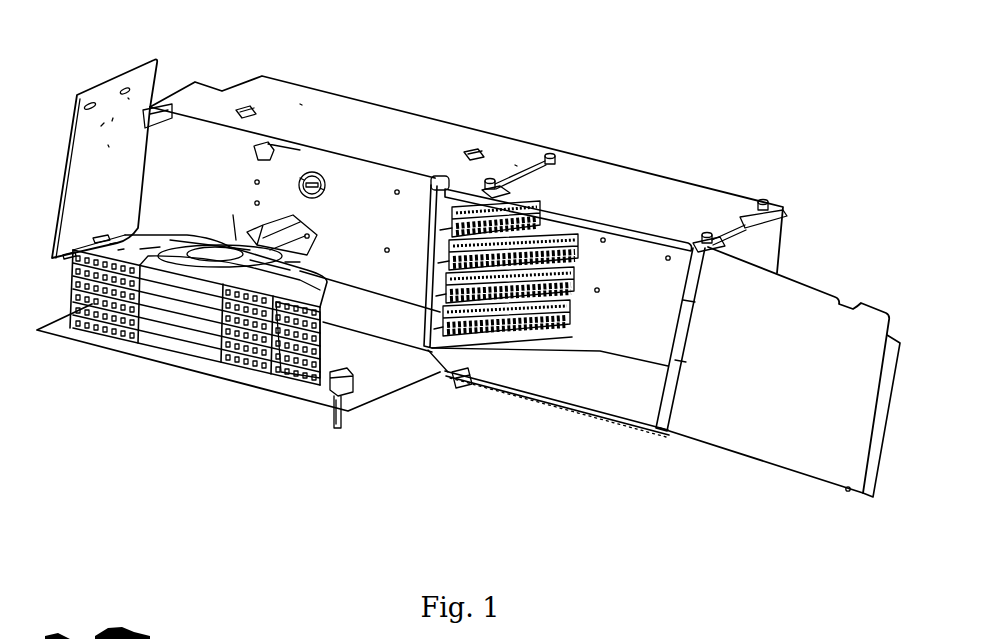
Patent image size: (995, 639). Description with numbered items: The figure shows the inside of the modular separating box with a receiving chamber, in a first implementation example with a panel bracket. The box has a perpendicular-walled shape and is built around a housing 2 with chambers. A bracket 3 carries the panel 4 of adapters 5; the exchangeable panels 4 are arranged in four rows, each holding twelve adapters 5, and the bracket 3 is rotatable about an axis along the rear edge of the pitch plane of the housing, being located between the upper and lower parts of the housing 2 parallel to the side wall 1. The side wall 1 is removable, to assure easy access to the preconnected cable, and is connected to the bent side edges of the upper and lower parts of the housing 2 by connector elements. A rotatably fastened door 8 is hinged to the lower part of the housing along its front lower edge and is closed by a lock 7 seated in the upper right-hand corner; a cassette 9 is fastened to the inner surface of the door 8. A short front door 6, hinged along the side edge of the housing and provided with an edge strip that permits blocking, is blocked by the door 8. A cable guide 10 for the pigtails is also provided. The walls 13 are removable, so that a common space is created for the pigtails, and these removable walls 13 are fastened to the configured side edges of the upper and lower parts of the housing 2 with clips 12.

The side wall 1 is at (168, 60).
The housing 2 is at (255, 107).
The bracket 3 is at (431, 182).
The panel 4 is at (522, 175).
The adapter 5 is at (573, 230).
The short front door 6 is at (773, 327).
The lock 7 is at (343, 410).
The door 8 is at (305, 380).
The cassette 9 is at (212, 315).
The cable guide 10 is at (238, 357).
The clip 12 is at (465, 383).
The removable wall 13 is at (600, 378).